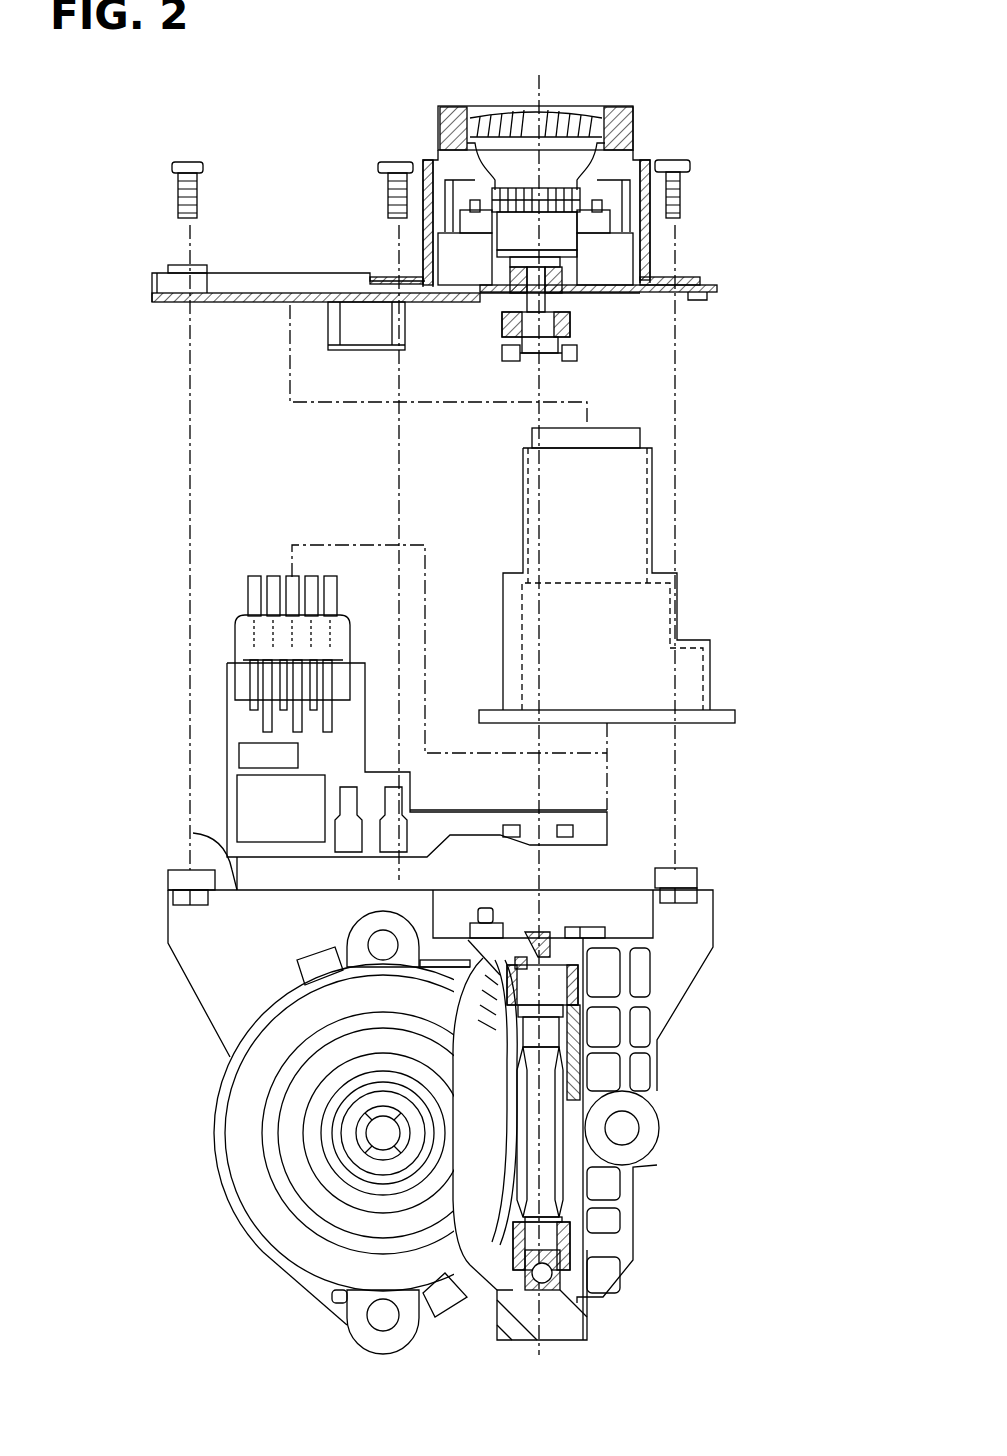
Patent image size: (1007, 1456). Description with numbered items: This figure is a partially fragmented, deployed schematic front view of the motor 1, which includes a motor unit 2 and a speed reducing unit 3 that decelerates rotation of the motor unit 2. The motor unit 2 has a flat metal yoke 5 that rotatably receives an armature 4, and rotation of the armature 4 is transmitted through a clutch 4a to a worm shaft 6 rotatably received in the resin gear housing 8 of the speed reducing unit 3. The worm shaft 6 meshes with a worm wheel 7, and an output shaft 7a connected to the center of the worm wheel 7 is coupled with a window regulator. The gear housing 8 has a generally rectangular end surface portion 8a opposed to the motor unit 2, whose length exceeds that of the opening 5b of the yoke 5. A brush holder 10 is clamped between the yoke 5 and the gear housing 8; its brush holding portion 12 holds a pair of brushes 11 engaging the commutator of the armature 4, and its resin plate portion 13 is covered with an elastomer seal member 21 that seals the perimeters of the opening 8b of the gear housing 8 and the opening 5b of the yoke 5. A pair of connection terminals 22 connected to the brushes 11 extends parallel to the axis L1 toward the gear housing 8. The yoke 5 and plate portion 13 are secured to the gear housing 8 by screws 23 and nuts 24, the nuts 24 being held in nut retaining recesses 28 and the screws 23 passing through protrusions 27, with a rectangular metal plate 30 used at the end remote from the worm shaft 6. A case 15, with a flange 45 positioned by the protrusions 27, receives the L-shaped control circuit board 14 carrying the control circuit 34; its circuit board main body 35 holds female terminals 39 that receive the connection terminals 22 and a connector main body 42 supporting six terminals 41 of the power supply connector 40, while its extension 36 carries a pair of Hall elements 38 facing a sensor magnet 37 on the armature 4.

The motor 1 is at (293, 160).
The motor unit 2 is at (636, 104).
The speed reducing unit 3 is at (218, 1062).
The armature 4 is at (588, 104).
The clutch 4a is at (502, 352).
The yoke 5 is at (652, 230).
The opening of the yoke 5b is at (425, 256).
The worm shaft 6 is at (528, 950).
The worm wheel 7 is at (465, 1240).
The output shaft 7a is at (370, 1140).
The gear housing 8 is at (690, 982).
The end surface portion 8a is at (193, 834).
The opening of the gear housing 8b is at (500, 893).
The brush holder 10 is at (628, 302).
The brushes 11 is at (468, 258).
The brush holding portion 12 is at (604, 290).
The plate portion 13 is at (287, 273).
The control circuit board 14 is at (371, 690).
The case 15 is at (657, 530).
The seal member 21 is at (717, 293).
The connection terminals 22 is at (372, 352).
The screws 23 is at (190, 162).
The nuts 24 is at (385, 895).
The protrusions 27 is at (168, 878).
The nut retaining recesses 28 is at (173, 900).
The rectangular metal plate 30 is at (175, 268).
The control circuit 34 is at (238, 793).
The circuit board main body 35 is at (232, 725).
The extension 36 is at (600, 828).
The sensor magnet 37 is at (502, 322).
The Hall elements 38 is at (512, 825).
The female terminals 39 is at (345, 838).
The power supply connector 40 is at (534, 436).
The terminals 41 is at (262, 578).
The connector main body 42 is at (350, 630).
The flange 45 is at (722, 712).
The axis L1 is at (585, 383).